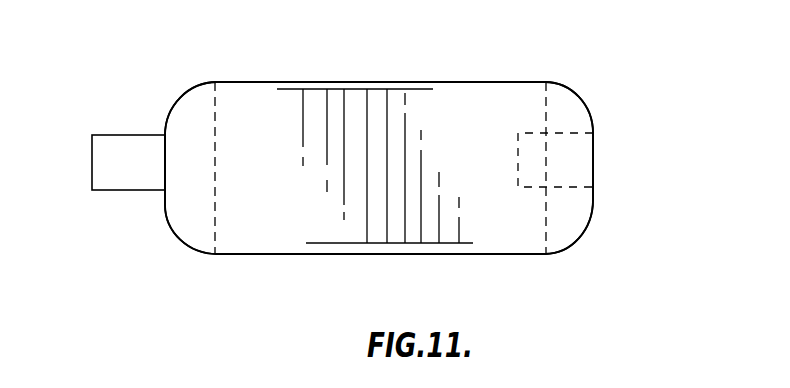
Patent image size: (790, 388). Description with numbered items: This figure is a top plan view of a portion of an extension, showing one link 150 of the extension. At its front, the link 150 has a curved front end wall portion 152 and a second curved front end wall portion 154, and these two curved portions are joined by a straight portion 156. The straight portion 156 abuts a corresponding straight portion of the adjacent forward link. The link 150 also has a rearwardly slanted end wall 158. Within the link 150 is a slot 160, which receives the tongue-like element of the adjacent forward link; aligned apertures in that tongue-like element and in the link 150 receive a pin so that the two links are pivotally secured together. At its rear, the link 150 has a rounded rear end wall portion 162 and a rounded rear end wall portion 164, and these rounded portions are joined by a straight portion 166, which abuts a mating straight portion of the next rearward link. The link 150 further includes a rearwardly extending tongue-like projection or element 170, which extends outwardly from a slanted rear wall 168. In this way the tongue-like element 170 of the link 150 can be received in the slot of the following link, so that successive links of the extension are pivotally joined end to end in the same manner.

The link 150 is at (346, 66).
The curved front end wall portion 152 is at (570, 95).
The curved front end wall portion 154 is at (568, 243).
The straight portion 156 is at (593, 153).
The rearwardly slanted end wall 158 is at (545, 227).
The slot 160 is at (570, 188).
The rounded rear end wall portion 162 is at (178, 98).
The rounded rear end wall portion 164 is at (187, 247).
The straight portion 166 is at (165, 200).
The slanted rear wall 168 is at (217, 213).
The tongue-like projection or element 170 is at (138, 133).